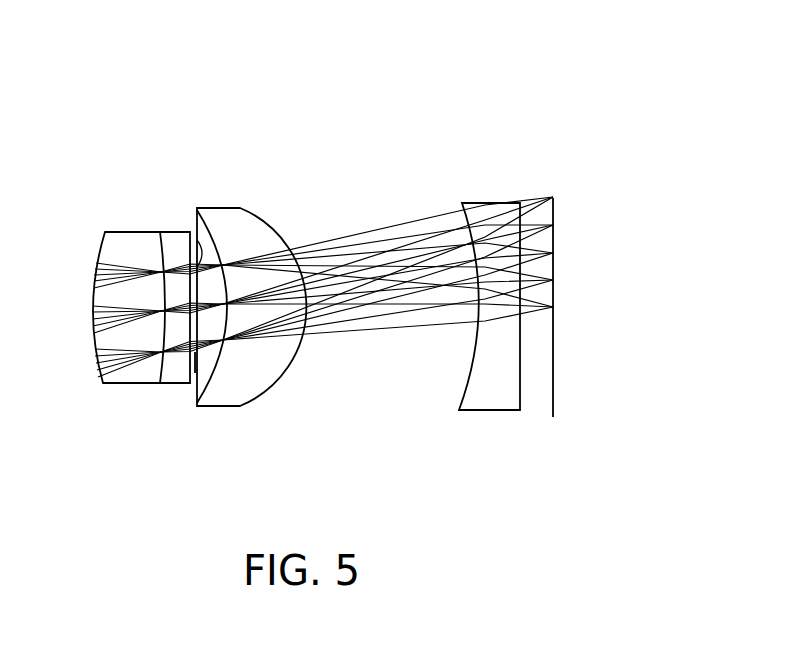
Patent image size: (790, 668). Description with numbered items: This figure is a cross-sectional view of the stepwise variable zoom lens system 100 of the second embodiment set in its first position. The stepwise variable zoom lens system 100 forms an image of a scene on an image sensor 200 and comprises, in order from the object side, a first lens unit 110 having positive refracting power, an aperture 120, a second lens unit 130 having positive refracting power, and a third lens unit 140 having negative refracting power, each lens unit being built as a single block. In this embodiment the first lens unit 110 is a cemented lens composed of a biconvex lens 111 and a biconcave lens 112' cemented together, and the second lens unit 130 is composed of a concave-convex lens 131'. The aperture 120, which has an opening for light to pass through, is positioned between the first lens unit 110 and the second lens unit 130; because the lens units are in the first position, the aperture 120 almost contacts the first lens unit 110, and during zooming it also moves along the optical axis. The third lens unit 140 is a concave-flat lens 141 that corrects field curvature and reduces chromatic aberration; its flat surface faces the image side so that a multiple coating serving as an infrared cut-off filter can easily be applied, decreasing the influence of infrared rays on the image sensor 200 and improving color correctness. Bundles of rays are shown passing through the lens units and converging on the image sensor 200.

The stepwise variable zoom lens system 100 is at (192, 63).
The first lens unit 110 is at (185, 190).
The biconvex lens 111 is at (113, 385).
The biconcave lens 112' is at (202, 367).
The aperture 120 is at (197, 242).
The second lens unit 130 is at (297, 183).
The concave-convex lens 131' is at (263, 350).
The third lens unit 140 is at (535, 185).
The concave-flat lens 141 is at (493, 412).
The image sensor 200 is at (557, 200).